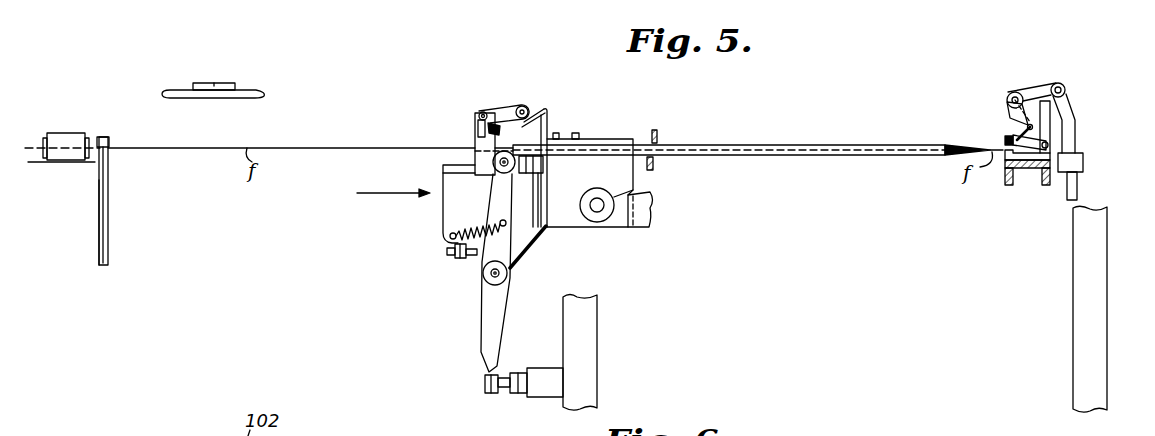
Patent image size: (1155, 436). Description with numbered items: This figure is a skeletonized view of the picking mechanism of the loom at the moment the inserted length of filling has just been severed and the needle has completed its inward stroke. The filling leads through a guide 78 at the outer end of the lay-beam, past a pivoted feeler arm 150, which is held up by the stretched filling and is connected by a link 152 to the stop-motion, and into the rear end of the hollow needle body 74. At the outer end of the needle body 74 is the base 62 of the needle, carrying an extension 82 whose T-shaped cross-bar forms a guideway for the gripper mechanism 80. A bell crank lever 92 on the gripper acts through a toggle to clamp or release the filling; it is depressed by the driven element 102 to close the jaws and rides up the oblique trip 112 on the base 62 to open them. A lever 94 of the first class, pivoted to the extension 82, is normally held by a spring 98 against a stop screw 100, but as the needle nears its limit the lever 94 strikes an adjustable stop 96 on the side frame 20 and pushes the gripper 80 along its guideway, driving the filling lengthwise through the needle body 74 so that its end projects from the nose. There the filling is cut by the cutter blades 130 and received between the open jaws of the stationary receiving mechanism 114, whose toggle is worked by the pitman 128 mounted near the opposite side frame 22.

The guide 78 is at (57, 133).
The feeler arm 150 is at (105, 136).
The link 152 is at (108, 193).
The driven element 102 is at (246, 93).
The gripper mechanism 80 is at (477, 127).
The bell crank lever 92 is at (507, 109).
The trip 112 is at (538, 114).
The base of the needle 62 is at (608, 158).
The cutter blades 130 is at (657, 134).
The needle body 74 is at (823, 143).
The extension 82 is at (452, 185).
The spring 98 is at (462, 232).
The stop screw 100 is at (474, 257).
The lever of the first class 94 is at (487, 327).
The adjustable stop 96 is at (501, 371).
The side frame 20 is at (590, 320).
The receiving mechanism 114 is at (1000, 117).
The pitman 128 is at (1077, 123).
The side frame 22 is at (1078, 288).